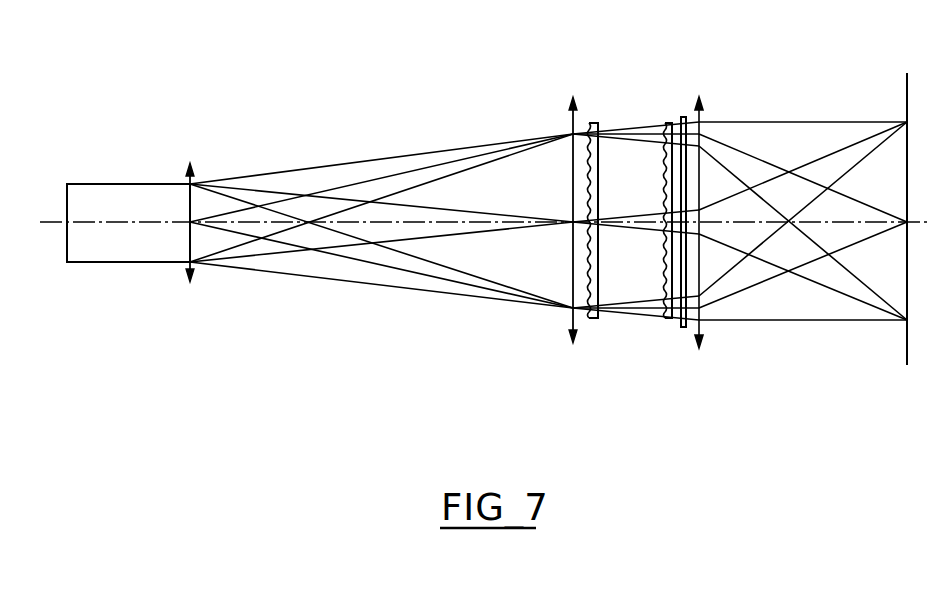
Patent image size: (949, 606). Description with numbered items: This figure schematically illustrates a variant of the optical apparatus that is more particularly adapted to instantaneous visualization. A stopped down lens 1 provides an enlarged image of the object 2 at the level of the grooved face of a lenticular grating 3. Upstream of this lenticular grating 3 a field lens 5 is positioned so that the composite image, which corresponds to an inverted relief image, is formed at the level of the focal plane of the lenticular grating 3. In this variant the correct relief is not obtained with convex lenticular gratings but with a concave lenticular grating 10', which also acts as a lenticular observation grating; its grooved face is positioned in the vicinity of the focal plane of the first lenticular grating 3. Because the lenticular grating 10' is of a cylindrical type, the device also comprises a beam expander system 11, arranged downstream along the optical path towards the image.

The stopped down lens 1 is at (187, 268).
The object 2 is at (64, 252).
The lenticular grating 3 is at (593, 319).
The field lens 5 is at (570, 311).
The concave lenticular grating 10' is at (688, 182).
The beam expander system 11 is at (677, 328).